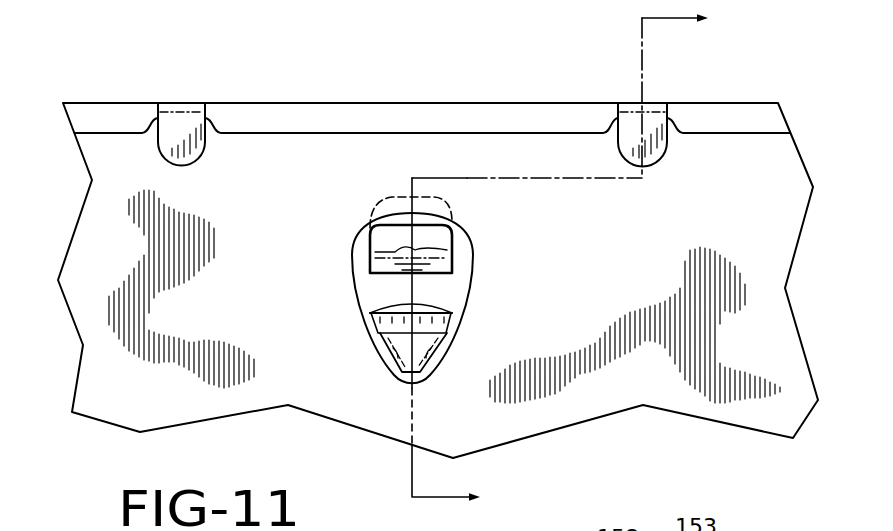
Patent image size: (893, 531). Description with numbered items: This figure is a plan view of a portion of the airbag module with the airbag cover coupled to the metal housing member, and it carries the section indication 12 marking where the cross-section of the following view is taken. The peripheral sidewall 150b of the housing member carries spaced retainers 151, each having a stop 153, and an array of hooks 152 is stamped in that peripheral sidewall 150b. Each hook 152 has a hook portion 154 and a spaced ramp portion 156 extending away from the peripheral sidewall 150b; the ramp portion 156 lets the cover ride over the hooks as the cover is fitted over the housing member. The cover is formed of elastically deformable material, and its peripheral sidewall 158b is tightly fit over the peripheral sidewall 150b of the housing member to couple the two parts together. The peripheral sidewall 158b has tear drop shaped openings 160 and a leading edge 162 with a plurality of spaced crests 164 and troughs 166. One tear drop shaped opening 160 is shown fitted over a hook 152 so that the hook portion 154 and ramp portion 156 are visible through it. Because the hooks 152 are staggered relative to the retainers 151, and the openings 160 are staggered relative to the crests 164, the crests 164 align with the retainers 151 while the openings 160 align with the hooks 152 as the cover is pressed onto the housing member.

The peripheral sidewall 150b is at (268, 118).
The retainers 151 is at (170, 101).
The hooks 152 is at (358, 289).
The stops 153 is at (192, 108).
The hook portion 154 is at (368, 248).
The ramp portion 156 is at (397, 355).
The peripheral sidewall 158b is at (342, 170).
The tear drop shaped openings 160 is at (436, 362).
The leading edge 162 is at (513, 128).
The crests 164 is at (605, 110).
The troughs 166 is at (435, 133).
The section line 12- 12 is at (585, 261).